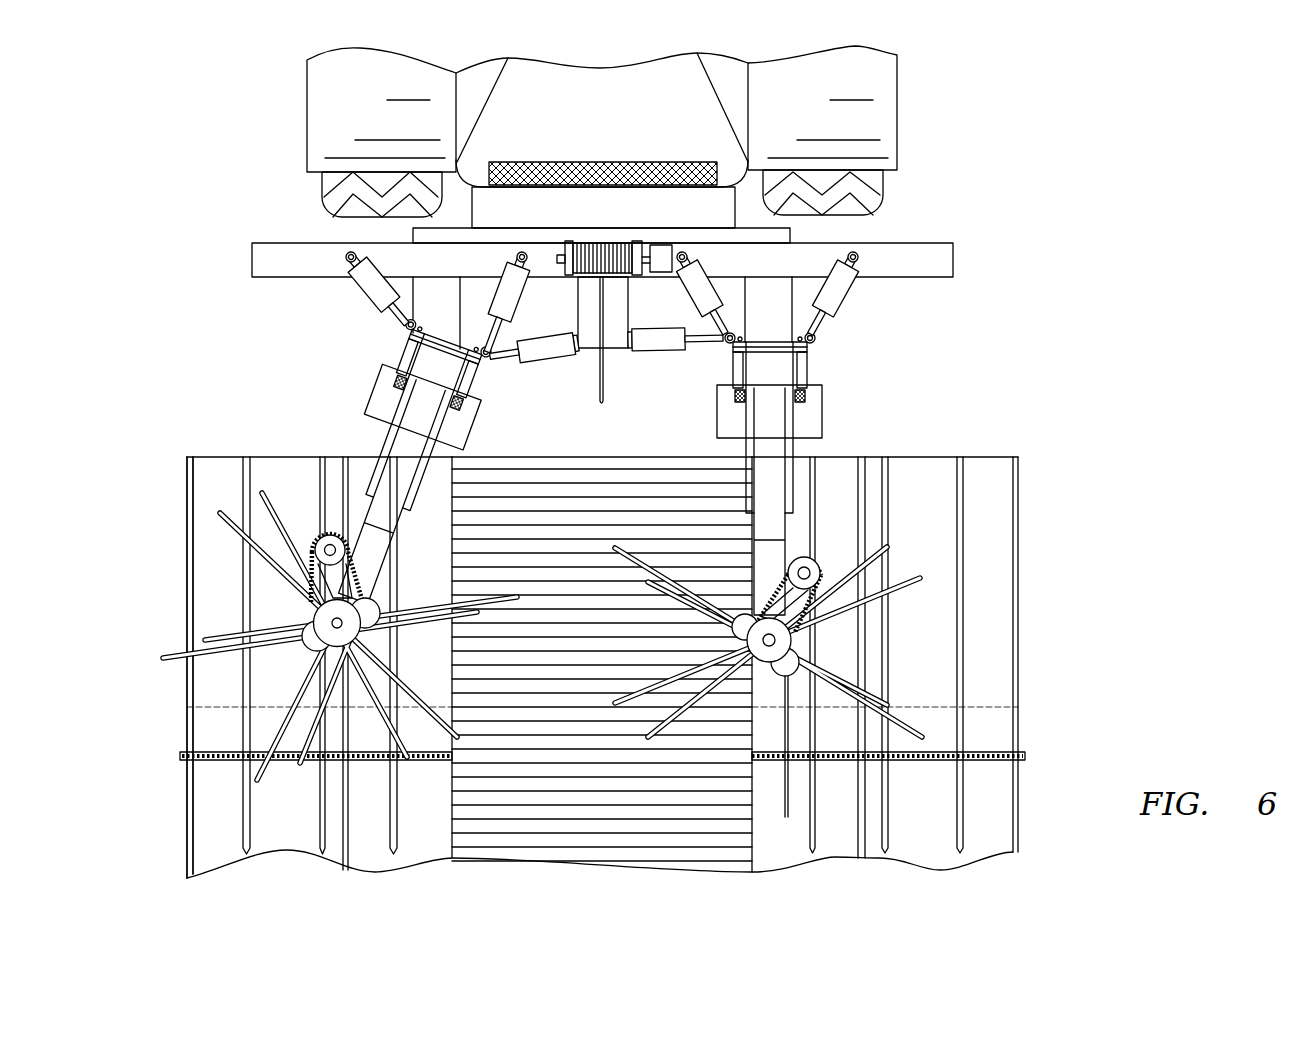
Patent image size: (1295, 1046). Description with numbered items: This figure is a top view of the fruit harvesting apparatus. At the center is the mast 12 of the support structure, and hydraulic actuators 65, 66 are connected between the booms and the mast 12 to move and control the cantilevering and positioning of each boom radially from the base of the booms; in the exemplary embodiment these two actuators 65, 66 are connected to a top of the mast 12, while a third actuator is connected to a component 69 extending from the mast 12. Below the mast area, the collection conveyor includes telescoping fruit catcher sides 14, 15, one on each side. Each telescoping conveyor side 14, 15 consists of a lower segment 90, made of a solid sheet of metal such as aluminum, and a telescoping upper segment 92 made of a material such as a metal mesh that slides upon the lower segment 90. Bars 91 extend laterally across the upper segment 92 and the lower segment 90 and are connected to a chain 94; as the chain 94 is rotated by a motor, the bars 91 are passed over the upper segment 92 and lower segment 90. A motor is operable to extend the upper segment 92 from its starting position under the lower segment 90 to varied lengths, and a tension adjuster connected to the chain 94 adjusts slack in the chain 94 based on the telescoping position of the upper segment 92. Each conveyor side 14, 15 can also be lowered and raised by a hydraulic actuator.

The mast 12 is at (920, 242).
The telescoping side fruit catcher conveyor 14 is at (292, 855).
The telescoping side fruit catcher conveyor 15 is at (998, 857).
The hydraulic actuator 65 is at (368, 296).
The hydraulic actuator 66 is at (518, 297).
The component extending from the mast 69 is at (615, 330).
The lower segment 90 is at (388, 875).
The bars 91 is at (243, 500).
The upper segment 92 is at (202, 877).
The chain 94 is at (183, 755).